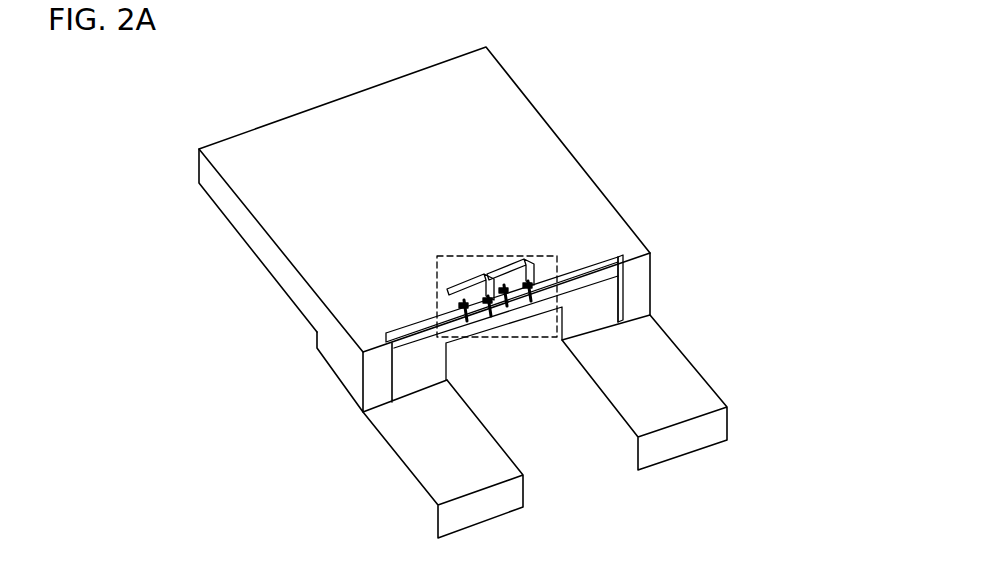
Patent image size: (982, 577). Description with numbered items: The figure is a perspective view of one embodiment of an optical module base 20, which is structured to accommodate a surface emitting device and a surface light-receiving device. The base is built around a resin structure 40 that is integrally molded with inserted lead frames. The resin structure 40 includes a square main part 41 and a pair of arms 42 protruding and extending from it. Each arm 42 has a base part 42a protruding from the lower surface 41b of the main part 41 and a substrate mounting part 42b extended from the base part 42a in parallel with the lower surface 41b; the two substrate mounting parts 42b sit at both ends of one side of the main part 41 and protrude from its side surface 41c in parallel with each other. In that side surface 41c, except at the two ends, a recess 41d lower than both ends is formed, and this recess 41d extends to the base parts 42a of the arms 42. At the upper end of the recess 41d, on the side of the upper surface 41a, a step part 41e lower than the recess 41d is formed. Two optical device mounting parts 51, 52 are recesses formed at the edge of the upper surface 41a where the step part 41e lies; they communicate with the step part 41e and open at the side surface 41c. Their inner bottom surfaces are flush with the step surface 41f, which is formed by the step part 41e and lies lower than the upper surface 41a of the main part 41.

The optical module base 20 is at (232, 116).
The resin structure 40 is at (510, 100).
The main part 41 is at (290, 280).
The upper surface 41a is at (343, 113).
The lower surface 41b is at (230, 229).
The side surface 41c is at (636, 268).
The recess 41d is at (605, 304).
The step part 41e is at (608, 253).
The step surface 41f is at (624, 282).
The arms 42 is at (283, 516).
The base part 42a is at (335, 378).
The substrate mounting part 42b is at (407, 447).
The optical device mounting part 51 is at (483, 289).
The optical device mounting part 52 is at (520, 272).